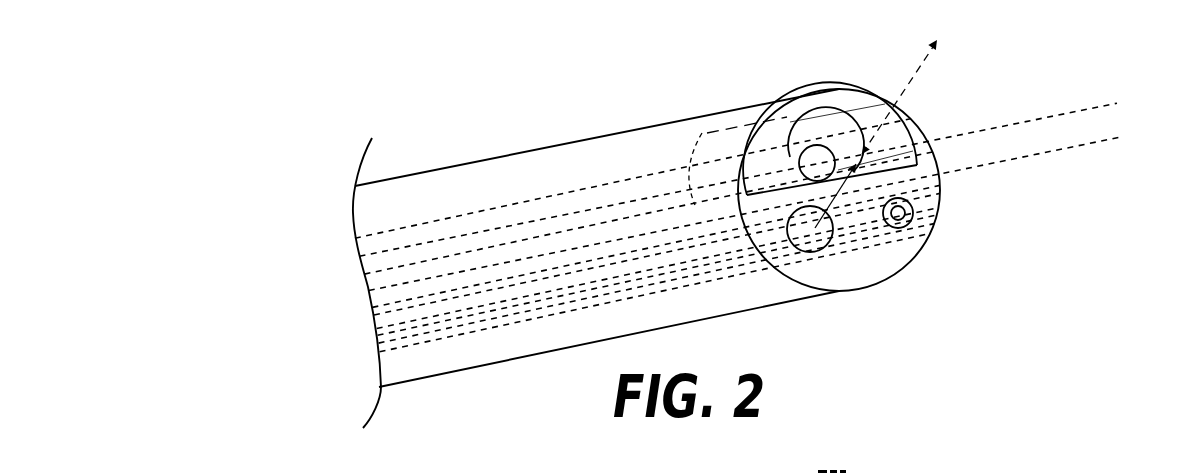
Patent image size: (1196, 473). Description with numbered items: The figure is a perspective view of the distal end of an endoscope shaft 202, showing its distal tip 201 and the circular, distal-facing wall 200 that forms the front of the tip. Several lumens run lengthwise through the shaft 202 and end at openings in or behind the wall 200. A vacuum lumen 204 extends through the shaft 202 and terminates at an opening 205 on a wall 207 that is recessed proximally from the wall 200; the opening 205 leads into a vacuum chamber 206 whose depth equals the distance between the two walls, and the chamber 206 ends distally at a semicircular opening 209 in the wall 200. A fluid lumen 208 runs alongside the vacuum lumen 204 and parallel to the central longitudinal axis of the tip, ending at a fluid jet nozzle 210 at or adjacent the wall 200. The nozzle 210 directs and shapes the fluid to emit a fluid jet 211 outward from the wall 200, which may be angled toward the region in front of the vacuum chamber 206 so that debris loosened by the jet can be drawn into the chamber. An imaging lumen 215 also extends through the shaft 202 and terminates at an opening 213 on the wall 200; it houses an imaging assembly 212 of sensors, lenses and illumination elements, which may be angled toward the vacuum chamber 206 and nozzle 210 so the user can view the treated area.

The distal-facing wall 200 is at (882, 257).
The distal tip 201 is at (783, 82).
The shaft 202 is at (485, 94).
The vacuum lumen 204 is at (757, 198).
The opening 205 is at (869, 146).
The vacuum chamber 206 is at (849, 126).
The wall 207 is at (773, 185).
The fluid lumen 208 is at (738, 273).
The opening 209 is at (913, 167).
The fluid jet nozzle 210 is at (810, 232).
The fluid jet 211 is at (918, 74).
The imaging assembly 212 is at (900, 213).
The opening 213 is at (900, 198).
The imaging lumen 215 is at (867, 230).